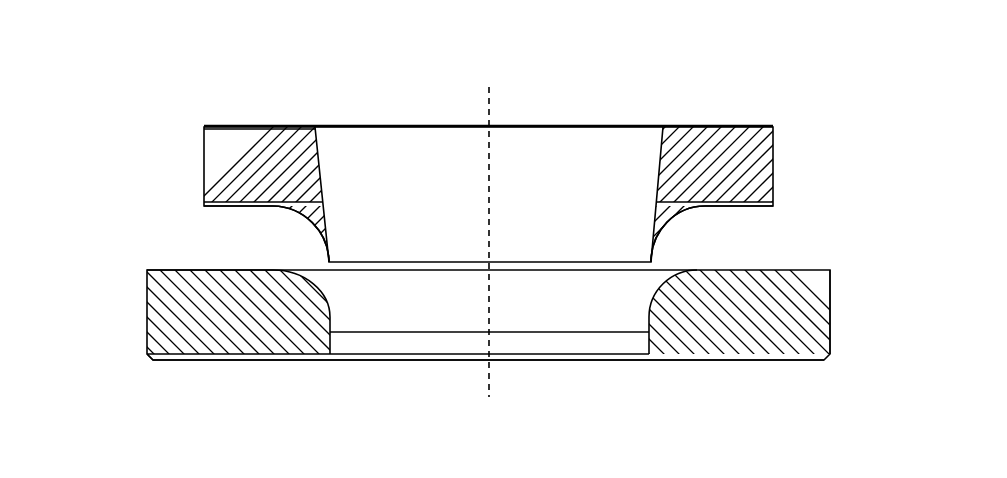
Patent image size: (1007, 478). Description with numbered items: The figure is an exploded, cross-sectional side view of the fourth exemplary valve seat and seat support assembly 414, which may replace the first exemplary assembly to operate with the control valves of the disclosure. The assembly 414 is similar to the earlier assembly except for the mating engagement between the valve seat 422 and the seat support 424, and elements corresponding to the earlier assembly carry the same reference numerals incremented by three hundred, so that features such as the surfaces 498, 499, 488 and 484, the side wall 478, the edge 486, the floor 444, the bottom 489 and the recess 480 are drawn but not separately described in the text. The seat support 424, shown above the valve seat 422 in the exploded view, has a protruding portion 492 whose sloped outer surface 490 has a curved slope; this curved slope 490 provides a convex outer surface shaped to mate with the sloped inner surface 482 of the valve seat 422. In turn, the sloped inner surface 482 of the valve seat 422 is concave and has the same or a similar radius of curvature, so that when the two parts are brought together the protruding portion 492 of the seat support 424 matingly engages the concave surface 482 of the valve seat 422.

The fourth exemplary valve seat and seat support assembly 414 is at (143, 86).
The top surface of insert flange 498 is at (238, 126).
The sloped inner surface 482 is at (653, 303).
The seat support 424 is at (760, 143).
The bottom surface of insert flange 488 is at (762, 182).
The lower surface of flange 499 is at (210, 208).
The sloped outer surface 490 is at (307, 222).
The protruding portion 492 is at (672, 220).
The top surface of base 484 is at (160, 270).
The valve seat 422 is at (813, 303).
The outer side wall of base 478 is at (833, 342).
The bottom edge of base 486 is at (167, 363).
The recess floor 444 is at (355, 343).
The bottom surface of base 489 is at (438, 357).
The recess 480 is at (610, 312).